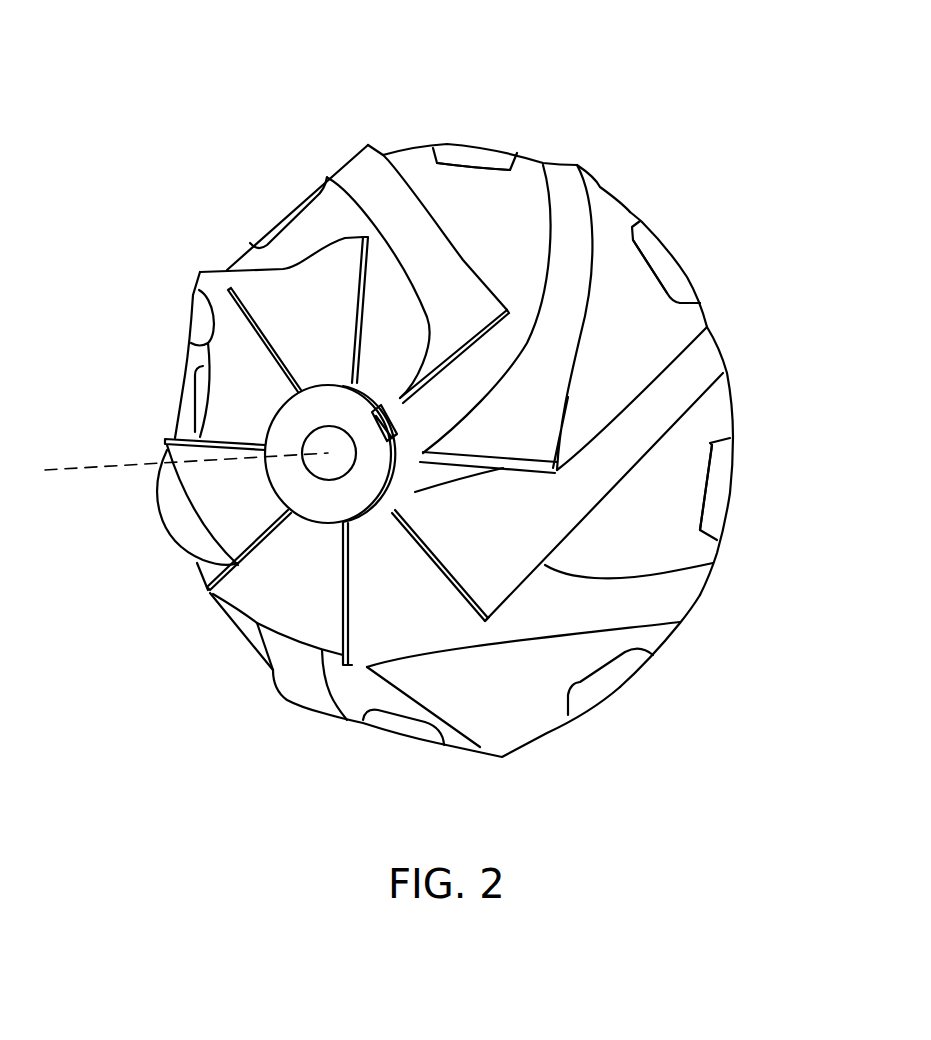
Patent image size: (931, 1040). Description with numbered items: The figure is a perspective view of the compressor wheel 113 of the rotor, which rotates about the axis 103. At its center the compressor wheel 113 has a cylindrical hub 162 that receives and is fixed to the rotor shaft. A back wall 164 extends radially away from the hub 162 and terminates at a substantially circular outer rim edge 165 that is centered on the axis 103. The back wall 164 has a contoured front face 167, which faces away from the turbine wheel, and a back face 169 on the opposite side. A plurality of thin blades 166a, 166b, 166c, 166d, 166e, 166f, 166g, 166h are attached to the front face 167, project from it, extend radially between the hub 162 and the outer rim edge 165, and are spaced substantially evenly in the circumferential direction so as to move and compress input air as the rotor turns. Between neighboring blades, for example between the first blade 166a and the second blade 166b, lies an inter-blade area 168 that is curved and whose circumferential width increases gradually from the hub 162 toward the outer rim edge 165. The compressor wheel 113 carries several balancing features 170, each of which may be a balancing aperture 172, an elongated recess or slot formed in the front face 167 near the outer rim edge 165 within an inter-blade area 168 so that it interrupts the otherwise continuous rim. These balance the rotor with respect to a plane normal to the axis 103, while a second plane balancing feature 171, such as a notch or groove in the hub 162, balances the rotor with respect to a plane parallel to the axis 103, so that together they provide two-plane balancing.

The axis 103 is at (83, 468).
The compressor wheel 113 is at (337, 106).
The hub 162 is at (330, 398).
The back wall 164 is at (623, 228).
The outer rim edge 165 is at (734, 392).
The first blade 166a is at (600, 490).
The second blade 166b is at (583, 294).
The blade 166c is at (463, 265).
The blade 166d is at (268, 282).
The blade 166e is at (228, 326).
The blade 166f is at (180, 452).
The blade 166g is at (237, 593).
The blade 166h is at (363, 665).
The front face 167 is at (540, 283).
The inter-blade area 168 is at (680, 323).
The back face 169 is at (668, 632).
The balancing feature 170 is at (481, 146).
The second plane balancing feature 171 is at (390, 427).
The balancing aperture 172 is at (513, 158).